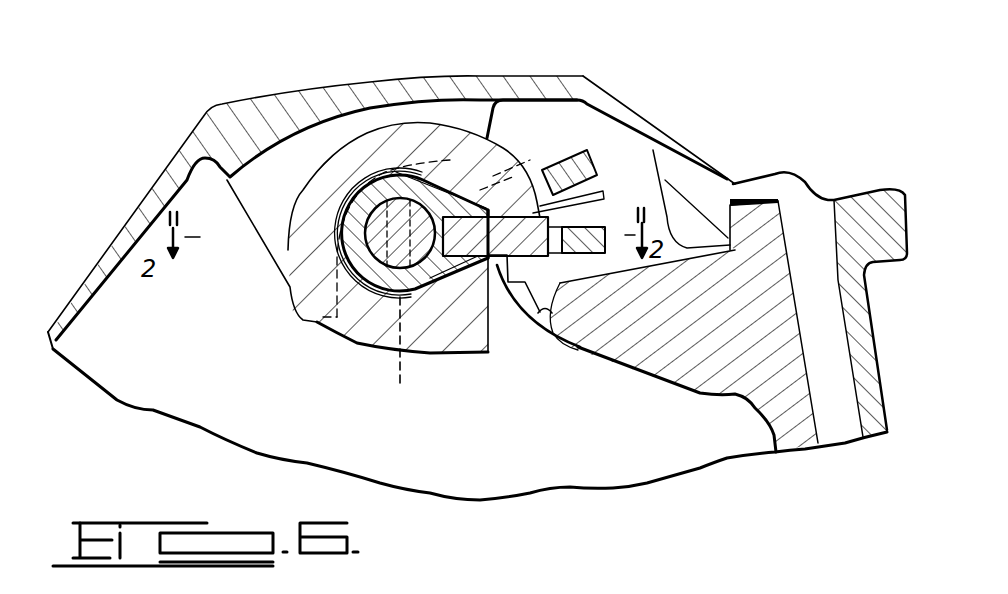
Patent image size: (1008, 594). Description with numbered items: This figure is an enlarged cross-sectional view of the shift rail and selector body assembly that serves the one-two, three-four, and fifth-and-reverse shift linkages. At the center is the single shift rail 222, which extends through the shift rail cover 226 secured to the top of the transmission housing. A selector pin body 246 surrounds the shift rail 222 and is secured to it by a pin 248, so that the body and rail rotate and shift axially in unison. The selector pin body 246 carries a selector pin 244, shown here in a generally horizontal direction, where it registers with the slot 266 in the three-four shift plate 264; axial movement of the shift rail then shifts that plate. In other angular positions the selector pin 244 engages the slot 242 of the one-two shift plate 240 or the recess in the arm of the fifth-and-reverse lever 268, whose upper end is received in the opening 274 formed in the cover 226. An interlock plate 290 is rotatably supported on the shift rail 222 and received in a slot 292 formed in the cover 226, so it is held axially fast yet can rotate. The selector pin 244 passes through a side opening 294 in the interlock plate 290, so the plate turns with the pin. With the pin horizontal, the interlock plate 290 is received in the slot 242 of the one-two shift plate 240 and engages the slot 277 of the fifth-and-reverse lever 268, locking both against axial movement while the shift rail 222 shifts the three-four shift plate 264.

The shift rail cover 226 is at (287, 103).
The 1-2 shift plate 240 is at (572, 150).
The slot 242 is at (535, 172).
The opening 274 is at (749, 200).
The side opening 294 is at (547, 208).
The 3-4 shift plate 264 is at (617, 227).
The slot 266 is at (552, 252).
The selector pin body 246 is at (353, 238).
The slot 292 is at (285, 277).
The interlock plate 290 is at (333, 330).
The shift rail 222 is at (387, 267).
The pin 248 is at (416, 355).
The selector pin 244 is at (489, 352).
The slot 277 is at (538, 314).
The fifth-and-reverse lever 268 is at (710, 373).